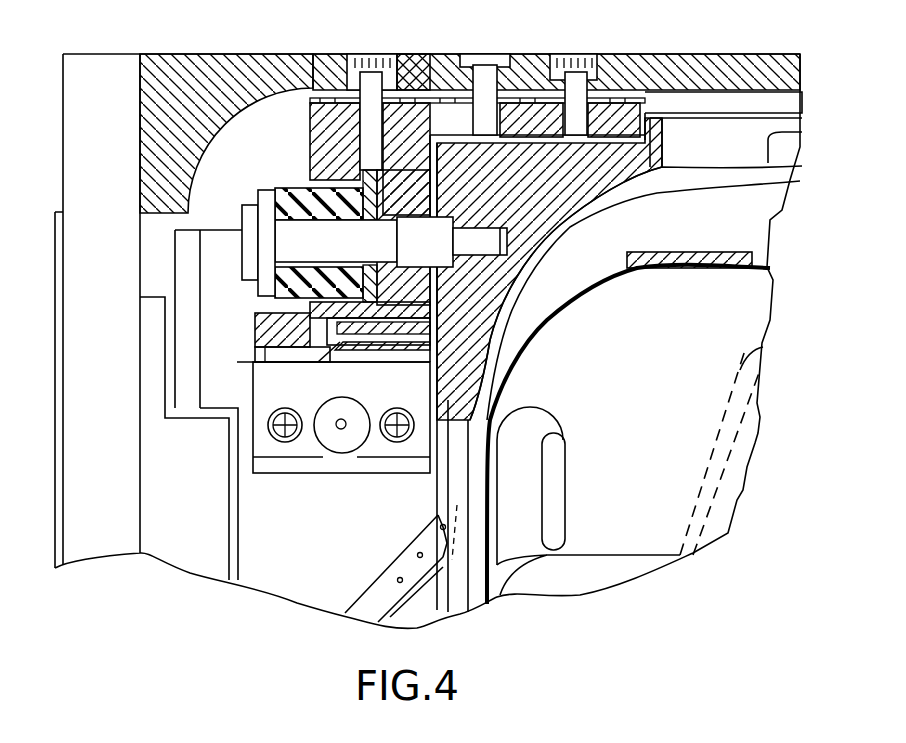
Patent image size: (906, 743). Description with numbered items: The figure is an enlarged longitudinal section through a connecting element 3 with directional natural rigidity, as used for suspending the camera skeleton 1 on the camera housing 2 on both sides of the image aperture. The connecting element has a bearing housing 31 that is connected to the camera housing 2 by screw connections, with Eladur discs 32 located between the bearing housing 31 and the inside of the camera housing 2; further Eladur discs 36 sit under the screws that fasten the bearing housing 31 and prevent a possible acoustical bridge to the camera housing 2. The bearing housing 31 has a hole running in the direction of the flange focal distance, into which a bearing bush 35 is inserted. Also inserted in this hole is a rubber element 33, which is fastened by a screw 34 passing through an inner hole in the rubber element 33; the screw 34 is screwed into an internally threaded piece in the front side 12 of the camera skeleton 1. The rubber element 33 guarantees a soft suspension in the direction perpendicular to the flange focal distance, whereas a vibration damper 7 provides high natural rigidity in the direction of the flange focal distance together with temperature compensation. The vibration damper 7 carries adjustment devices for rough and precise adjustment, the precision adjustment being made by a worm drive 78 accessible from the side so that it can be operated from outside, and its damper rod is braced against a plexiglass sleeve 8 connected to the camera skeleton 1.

The camera skeleton 1 is at (770, 298).
The camera housing 2 is at (155, 63).
The connecting element 3 is at (323, 133).
The vibration damper 7 is at (440, 352).
The plexiglass sleeve 8 is at (490, 408).
The front side 12 is at (560, 240).
The bearing housing 31 is at (628, 100).
The Eladur discs 32 is at (410, 53).
The rubber element 33 is at (290, 197).
The screw 34 is at (250, 260).
The bearing bush 35 is at (415, 283).
The Eladur discs 36 is at (353, 55).
The worm drive 78 is at (347, 443).